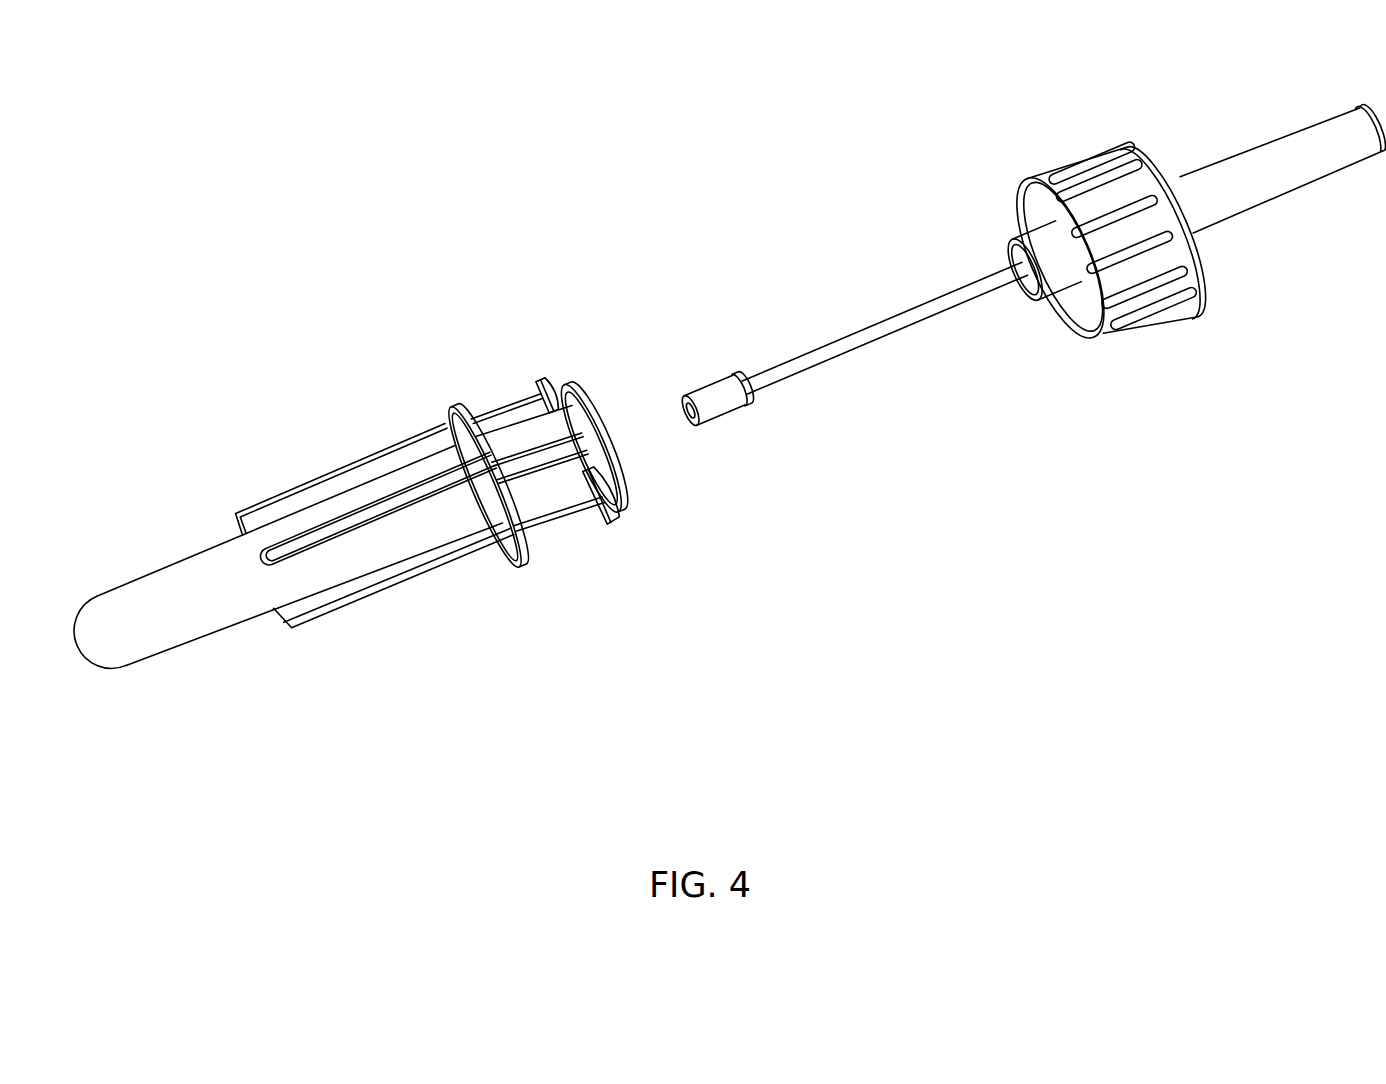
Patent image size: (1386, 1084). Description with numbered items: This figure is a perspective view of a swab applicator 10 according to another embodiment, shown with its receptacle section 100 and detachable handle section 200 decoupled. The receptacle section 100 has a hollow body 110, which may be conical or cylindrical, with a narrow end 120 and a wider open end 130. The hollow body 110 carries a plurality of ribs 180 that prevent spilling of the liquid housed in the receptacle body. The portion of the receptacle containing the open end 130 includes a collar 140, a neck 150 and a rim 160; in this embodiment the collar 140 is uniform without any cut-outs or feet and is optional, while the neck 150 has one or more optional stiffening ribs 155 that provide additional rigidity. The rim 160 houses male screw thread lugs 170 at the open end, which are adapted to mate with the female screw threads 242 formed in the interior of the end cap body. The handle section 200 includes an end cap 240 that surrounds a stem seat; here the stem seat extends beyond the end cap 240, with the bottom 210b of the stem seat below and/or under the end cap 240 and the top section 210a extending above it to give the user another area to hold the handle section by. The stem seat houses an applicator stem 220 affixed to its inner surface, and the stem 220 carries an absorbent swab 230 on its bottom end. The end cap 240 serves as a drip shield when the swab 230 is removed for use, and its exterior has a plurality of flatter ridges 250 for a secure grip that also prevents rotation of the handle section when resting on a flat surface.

The swab applicator 10 is at (770, 141).
The receptacle section 100 is at (537, 690).
The hollow body 110 is at (200, 613).
The narrow end 120 is at (107, 647).
The open end 130 is at (629, 485).
The collar 140 is at (467, 430).
The neck 150 is at (491, 391).
The stiffening ribs 155 is at (570, 433).
The rim 160 is at (602, 447).
The thread lugs 170 is at (553, 403).
The ribs 180 is at (415, 500).
The handle section 200 is at (1085, 472).
The top section of the stem seat 210a is at (1283, 172).
The bottom of the stem seat 210b is at (1050, 270).
The applicator stem 220 is at (872, 335).
The swab 230 is at (720, 397).
The end cap 240 is at (1197, 302).
The female screw threads 242 is at (1090, 287).
The ridges 250 is at (1123, 210).